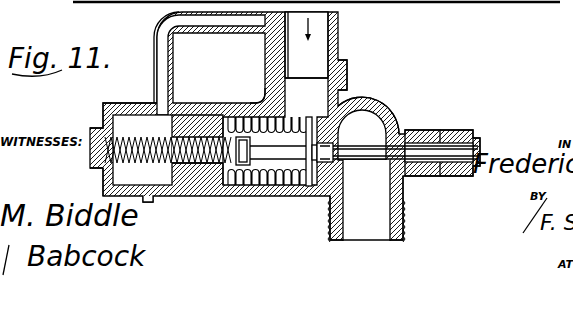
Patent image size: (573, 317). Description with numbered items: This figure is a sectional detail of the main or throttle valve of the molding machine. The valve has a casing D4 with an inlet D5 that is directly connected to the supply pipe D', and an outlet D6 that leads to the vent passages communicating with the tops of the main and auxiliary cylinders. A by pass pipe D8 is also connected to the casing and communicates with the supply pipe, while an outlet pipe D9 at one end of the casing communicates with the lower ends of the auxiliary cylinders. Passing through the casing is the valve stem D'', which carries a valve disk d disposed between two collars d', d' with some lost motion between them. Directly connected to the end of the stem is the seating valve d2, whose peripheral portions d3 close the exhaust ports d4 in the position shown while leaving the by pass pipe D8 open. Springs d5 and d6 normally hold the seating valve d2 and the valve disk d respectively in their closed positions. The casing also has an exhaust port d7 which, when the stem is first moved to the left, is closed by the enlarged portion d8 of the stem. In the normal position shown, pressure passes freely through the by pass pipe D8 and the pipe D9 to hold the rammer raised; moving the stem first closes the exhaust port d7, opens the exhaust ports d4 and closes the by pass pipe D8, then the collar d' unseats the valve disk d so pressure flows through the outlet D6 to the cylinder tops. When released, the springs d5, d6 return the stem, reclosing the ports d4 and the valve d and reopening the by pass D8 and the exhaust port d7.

The valve disk d is at (285, 126).
The by pass pipe D8 is at (242, 23).
The seating valve d2 is at (265, 100).
The spring d5 is at (118, 133).
The pipe D' is at (333, 44).
The inlet D5 is at (305, 72).
The peripheral portions d3 is at (183, 108).
The exhaust ports d4 is at (222, 92).
The spring d6 is at (293, 117).
The valve casing D4 is at (372, 112).
The collars d' is at (334, 171).
The outlet D6 is at (386, 232).
The exhaust port d7 is at (403, 128).
The enlarged portion of the valve stem d8 is at (448, 132).
The valve stem D'' is at (423, 136).
The outlet pipe D9 is at (153, 199).